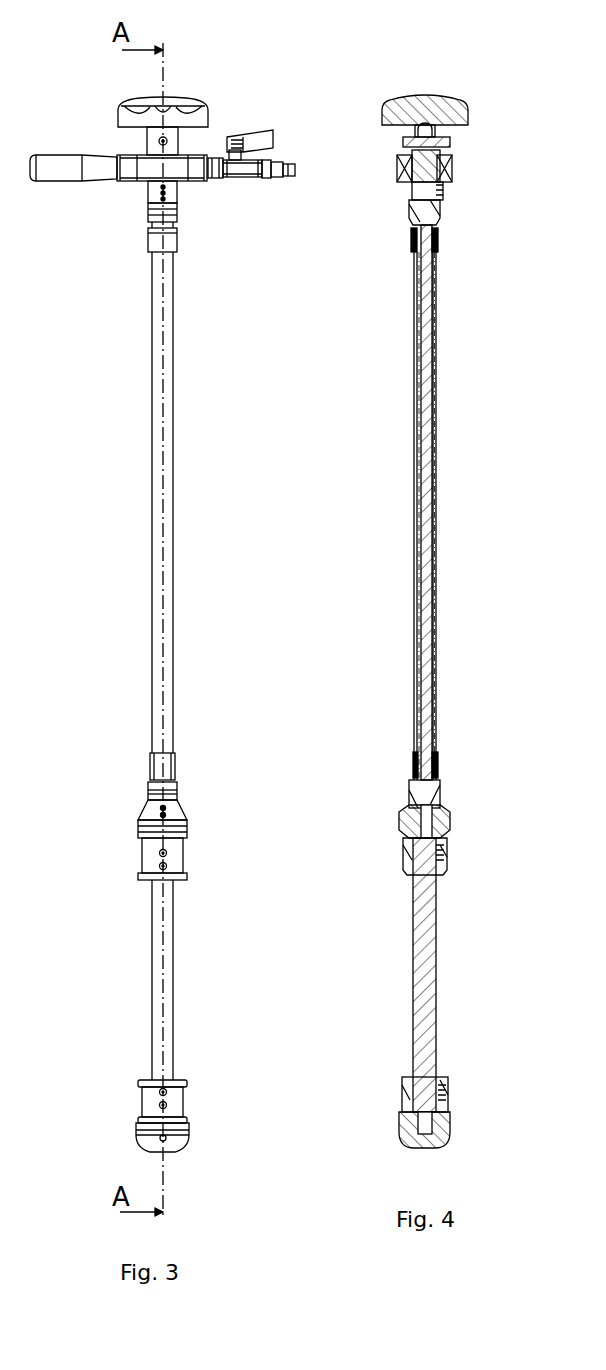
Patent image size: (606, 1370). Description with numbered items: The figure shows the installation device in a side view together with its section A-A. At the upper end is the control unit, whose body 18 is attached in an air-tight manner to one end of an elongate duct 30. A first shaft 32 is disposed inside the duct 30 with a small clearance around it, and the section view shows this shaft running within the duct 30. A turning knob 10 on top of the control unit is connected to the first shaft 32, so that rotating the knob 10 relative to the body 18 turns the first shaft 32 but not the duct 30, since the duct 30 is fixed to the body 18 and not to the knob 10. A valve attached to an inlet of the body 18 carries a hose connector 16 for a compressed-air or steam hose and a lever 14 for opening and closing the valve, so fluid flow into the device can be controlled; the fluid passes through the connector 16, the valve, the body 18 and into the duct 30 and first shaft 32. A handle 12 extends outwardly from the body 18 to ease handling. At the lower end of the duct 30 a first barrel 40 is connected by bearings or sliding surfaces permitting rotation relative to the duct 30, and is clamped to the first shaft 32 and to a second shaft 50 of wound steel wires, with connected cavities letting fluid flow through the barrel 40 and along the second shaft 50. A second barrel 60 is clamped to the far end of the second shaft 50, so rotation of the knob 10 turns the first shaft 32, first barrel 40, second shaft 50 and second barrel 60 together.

In FIG. 3, the turning knob 10 is at (178, 100).
In FIG. 4, the turning knob 10 is at (468, 118).
In FIG. 3, the handle 12 is at (62, 183).
In FIG. 3, the lever 14 is at (243, 138).
In FIG. 3, the hose connector 16 is at (278, 160).
In FIG. 3, the body 18 is at (194, 183).
In FIG. 4, the body 18 is at (452, 175).
In FIG. 3, the duct 30 is at (174, 478).
In FIG. 4, the duct 30 is at (437, 548).
In FIG. 4, the first shaft 32 is at (423, 463).
In FIG. 3, the first barrel 40 is at (188, 820).
In FIG. 4, the first barrel 40 is at (448, 820).
In FIG. 3, the second shaft 50 is at (178, 985).
In FIG. 4, the second shaft 50 is at (440, 985).
In FIG. 3, the second barrel 60 is at (185, 1115).
In FIG. 4, the second barrel 60 is at (448, 1110).